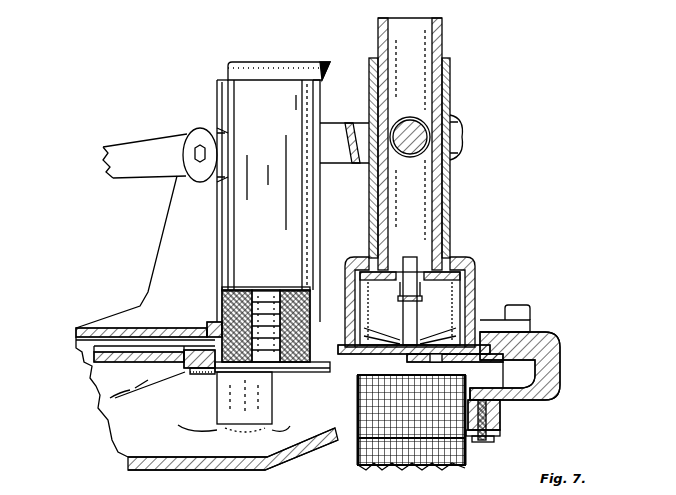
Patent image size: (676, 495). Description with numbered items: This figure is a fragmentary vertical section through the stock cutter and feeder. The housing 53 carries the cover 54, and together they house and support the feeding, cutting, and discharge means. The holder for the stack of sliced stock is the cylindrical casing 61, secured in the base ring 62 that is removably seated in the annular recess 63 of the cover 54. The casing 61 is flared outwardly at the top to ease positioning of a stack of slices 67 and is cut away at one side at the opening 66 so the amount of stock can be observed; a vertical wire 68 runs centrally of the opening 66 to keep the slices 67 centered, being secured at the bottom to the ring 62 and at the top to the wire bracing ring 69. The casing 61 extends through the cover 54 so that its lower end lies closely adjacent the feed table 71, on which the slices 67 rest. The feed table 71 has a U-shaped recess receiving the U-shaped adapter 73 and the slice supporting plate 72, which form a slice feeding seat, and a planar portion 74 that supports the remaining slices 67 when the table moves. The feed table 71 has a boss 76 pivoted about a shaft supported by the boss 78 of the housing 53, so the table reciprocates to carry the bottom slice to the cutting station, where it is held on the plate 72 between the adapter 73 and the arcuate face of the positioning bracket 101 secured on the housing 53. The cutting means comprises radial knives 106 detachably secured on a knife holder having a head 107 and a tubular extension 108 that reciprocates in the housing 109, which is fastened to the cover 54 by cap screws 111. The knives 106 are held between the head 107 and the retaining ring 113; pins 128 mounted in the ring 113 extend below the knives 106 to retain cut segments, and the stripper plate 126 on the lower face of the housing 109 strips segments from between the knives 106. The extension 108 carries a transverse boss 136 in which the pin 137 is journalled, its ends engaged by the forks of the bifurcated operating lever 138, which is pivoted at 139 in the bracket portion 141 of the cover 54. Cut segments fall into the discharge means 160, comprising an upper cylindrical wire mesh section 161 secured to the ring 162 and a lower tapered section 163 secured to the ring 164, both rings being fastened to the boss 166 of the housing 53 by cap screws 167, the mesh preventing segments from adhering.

The housing 53 is at (546, 399).
The cover 54 is at (92, 318).
The cylindrical casing 61 is at (314, 106).
The base ring 62 is at (236, 313).
The annular recess 63 is at (207, 323).
The opening 66 is at (216, 88).
The slices of stock 67 is at (226, 291).
The vertical wire 68 is at (217, 237).
The wire bracing ring 69 is at (322, 78).
The feed table 71 is at (132, 392).
The slice supporting plate 72 is at (214, 378).
The adapter 73 is at (215, 358).
The planar portion 74 is at (96, 340).
The boss 76 is at (273, 394).
The boss 78 is at (258, 432).
The positioning bracket 101 is at (542, 350).
The knives 106 is at (448, 313).
The head 107 is at (462, 252).
The tubular extension 108 is at (437, 207).
The housing 109 is at (451, 188).
The cap screws 111 is at (532, 313).
The retaining ring 113 is at (466, 284).
The stripper plate 126 is at (352, 352).
The pins 128 is at (370, 338).
The transverse boss 136 is at (420, 120).
The pin 137 is at (402, 158).
The bifurcated operating lever 138 is at (334, 160).
The pivot 139 is at (196, 142).
The bracket portion 141 is at (182, 210).
The discharge means 160 is at (466, 471).
The upper cylindrical section 161 is at (357, 398).
The ring 162 is at (494, 434).
The lower tapered section 163 is at (357, 456).
The ring 164 is at (494, 440).
The boss 166 is at (492, 425).
The cap screws 167 is at (485, 445).